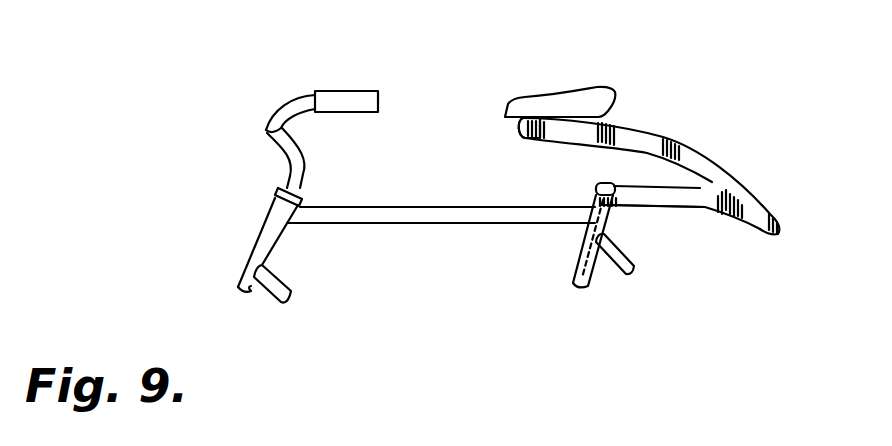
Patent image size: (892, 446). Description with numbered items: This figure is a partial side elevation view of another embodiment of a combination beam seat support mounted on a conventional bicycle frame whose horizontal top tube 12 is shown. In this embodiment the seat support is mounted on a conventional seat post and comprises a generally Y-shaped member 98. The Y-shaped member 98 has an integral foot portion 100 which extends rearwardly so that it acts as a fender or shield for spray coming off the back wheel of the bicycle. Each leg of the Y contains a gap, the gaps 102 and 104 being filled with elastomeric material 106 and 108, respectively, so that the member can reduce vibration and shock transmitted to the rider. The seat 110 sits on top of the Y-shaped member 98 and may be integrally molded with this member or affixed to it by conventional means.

The horizontal top tube 12 is at (328, 222).
The generally Y-shaped member 98 is at (712, 164).
The integral foot portion 100 is at (735, 218).
The gap 102 is at (520, 132).
The gap 104 is at (597, 190).
The elastomeric material 106 is at (623, 133).
The elastomeric material 108 is at (610, 185).
The seat 110 is at (607, 89).